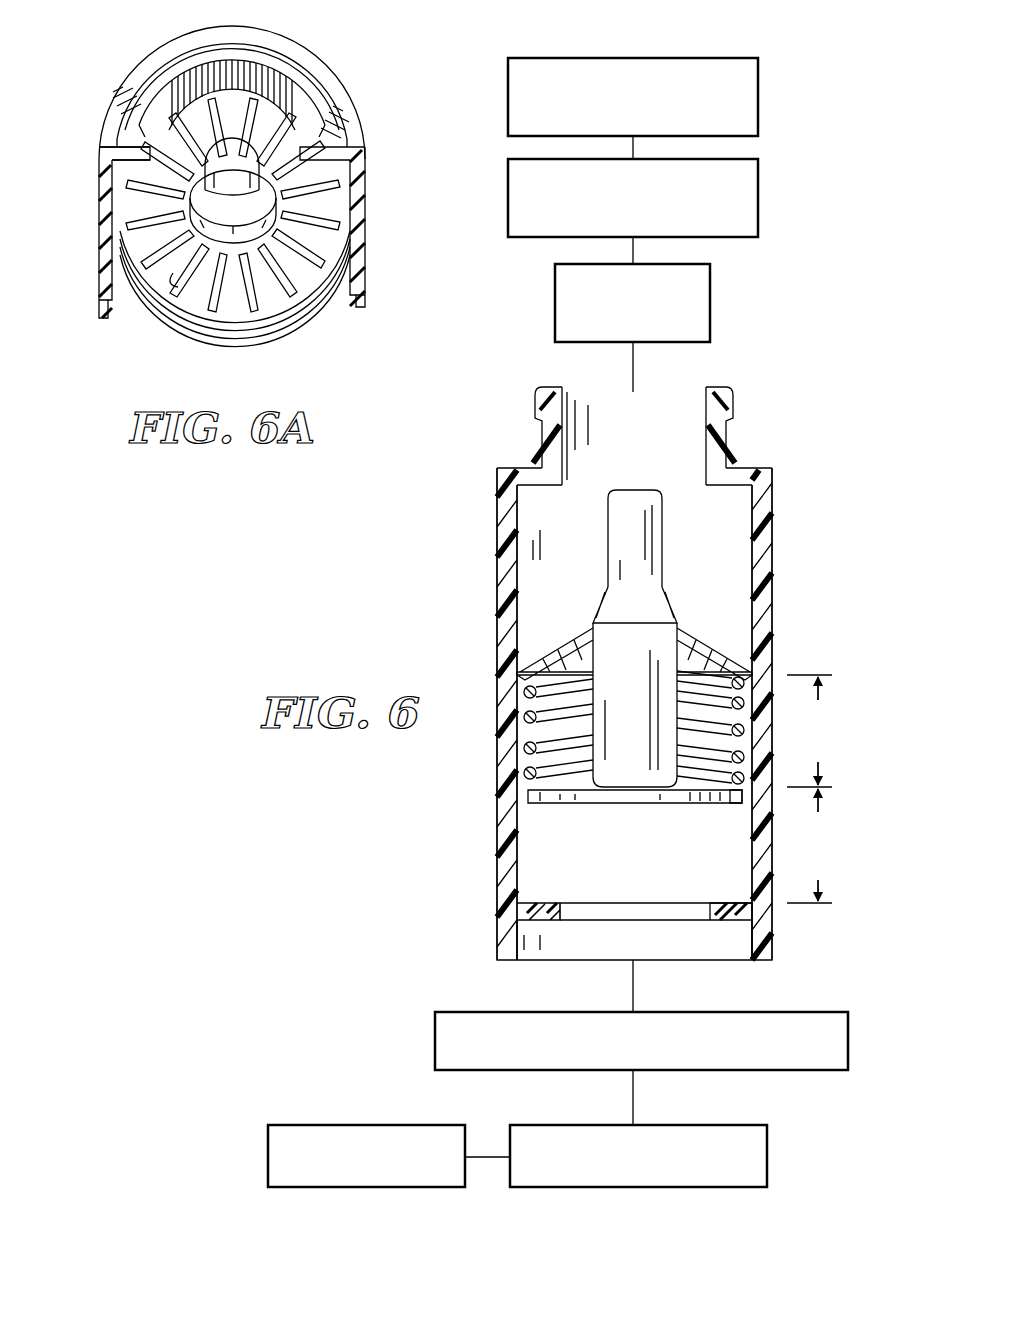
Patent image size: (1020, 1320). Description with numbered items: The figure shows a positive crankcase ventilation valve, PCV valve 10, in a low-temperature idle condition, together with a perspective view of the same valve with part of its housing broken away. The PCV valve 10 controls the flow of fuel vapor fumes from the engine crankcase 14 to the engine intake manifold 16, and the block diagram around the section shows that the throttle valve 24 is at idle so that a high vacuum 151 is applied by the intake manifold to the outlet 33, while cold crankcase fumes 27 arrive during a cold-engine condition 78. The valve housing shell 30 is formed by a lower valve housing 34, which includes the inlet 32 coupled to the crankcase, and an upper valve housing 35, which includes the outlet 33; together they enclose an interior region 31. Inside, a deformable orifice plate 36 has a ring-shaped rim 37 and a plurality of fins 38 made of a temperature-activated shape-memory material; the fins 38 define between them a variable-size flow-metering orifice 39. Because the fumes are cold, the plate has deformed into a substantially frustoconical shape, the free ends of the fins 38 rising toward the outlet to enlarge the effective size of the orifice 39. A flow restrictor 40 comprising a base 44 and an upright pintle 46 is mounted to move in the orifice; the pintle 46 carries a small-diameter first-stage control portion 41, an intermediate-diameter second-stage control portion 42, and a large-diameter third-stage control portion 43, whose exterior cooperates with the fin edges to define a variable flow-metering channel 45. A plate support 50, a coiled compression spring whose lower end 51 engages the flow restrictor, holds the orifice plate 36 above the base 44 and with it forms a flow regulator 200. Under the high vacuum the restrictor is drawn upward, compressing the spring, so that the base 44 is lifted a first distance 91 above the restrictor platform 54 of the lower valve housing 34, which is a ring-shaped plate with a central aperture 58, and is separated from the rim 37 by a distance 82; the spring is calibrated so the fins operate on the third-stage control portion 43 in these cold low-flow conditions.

In FIG. 6, the positive crankcase ventilation (PCV) valve 10 is at (786, 580).
In FIG. 6A, the positive crankcase ventilation (PCV) valve 10 is at (388, 130).
In FIG. 6, the engine crankcase 14 is at (562, 1130).
In FIG. 6, the engine intake manifold 16 is at (538, 241).
In FIG. 6, the throttle valve 24 is at (508, 126).
In FIG. 6, the crankcase fumes 27 is at (435, 1052).
In FIG. 6, the valve housing shell 30 is at (546, 598).
In FIG. 6A, the valve housing shell 30 is at (92, 195).
In FIG. 6, the interior region 31 is at (517, 583).
In FIG. 6, the inlet 32 is at (557, 945).
In FIG. 6, the outlet 33 is at (691, 380).
In FIG. 6A, the outlet 33 is at (303, 92).
In FIG. 6, the lower valve housing 34 is at (493, 930).
In FIG. 6, the upper valve housing 35 is at (773, 508).
In FIG. 6A, the upper valve housing 35 is at (368, 106).
In FIG. 6, the deformable orifice plate 36 is at (733, 643).
In FIG. 6, the ring-shaped rim 37 is at (520, 672).
In FIG. 6A, the ring-shaped rim 37 is at (173, 277).
In FIG. 6, the fins 38 is at (567, 648).
In FIG. 6A, the fins 38 is at (128, 238).
In FIG. 6, the flow-metering orifice 39 is at (683, 623).
In FIG. 6A, the flow-metering orifice 39 is at (296, 212).
In FIG. 6, the flow restrictor 40 is at (556, 806).
In FIG. 6A, the flow restrictor 40 is at (257, 133).
In FIG. 6, the first-stage control portion 41 is at (635, 538).
In FIG. 6, the second-stage control portion 42 is at (635, 605).
In FIG. 6A, the second-stage control portion 42 is at (265, 205).
In FIG. 6, the third-stage control portion 43 is at (605, 732).
In FIG. 6, the base 44 is at (660, 797).
In FIG. 6A, the base 44 is at (302, 257).
In FIG. 6, the flow-metering channel 45 is at (578, 630).
In FIG. 6A, the flow-metering channel 45 is at (188, 175).
In FIG. 6, the pintle 46 is at (603, 522).
In FIG. 6A, the pintle 46 is at (232, 220).
In FIG. 6, the plate support 50 is at (531, 752).
In FIG. 6A, the plate support 50 is at (302, 312).
In FIG. 6, the lower end 51 is at (728, 778).
In FIG. 6, the restrictor platform 54 is at (547, 907).
In FIG. 6, the central aperture 58 is at (562, 910).
In FIG. 6, the cold-engine condition 78 is at (367, 1125).
In FIG. 6, the distance 82 is at (809, 731).
In FIG. 6, the first distance 91 is at (809, 846).
In FIG. 6, the high vacuum 151 is at (555, 308).
In FIG. 6, the flow regulator 200 is at (760, 632).
In FIG. 6A, the flow regulator 200 is at (167, 343).